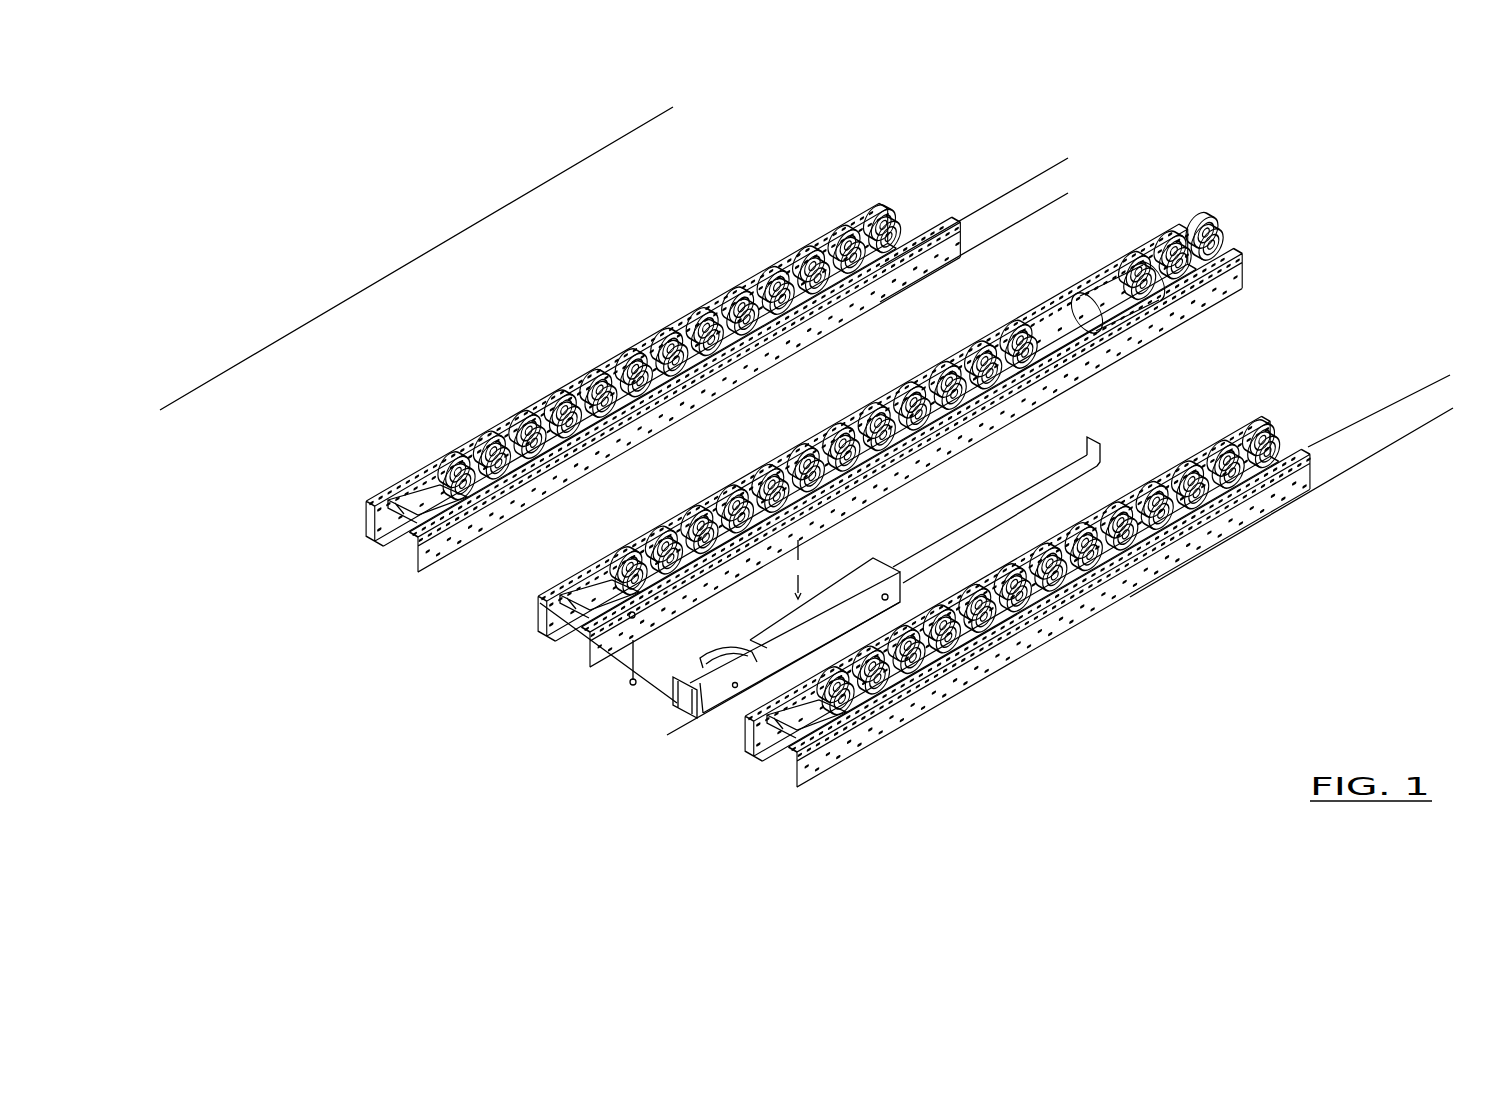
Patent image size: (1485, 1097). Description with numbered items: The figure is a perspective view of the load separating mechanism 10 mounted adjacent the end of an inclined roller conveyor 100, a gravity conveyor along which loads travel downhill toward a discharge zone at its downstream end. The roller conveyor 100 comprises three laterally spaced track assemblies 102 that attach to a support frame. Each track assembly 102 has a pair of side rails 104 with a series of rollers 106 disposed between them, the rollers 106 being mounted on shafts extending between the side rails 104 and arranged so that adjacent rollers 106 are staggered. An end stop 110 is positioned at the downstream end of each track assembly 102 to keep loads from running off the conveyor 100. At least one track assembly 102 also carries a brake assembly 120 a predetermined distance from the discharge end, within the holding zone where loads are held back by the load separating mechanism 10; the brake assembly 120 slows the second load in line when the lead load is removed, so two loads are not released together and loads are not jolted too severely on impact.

The load separating mechanism 10 is at (707, 712).
The roller conveyor 100 is at (414, 258).
The track assembly 102 is at (828, 216).
The side rail 104 is at (500, 432).
The roller 106 is at (720, 298).
The end stop 110 is at (403, 487).
The brake assembly 120 is at (1092, 310).